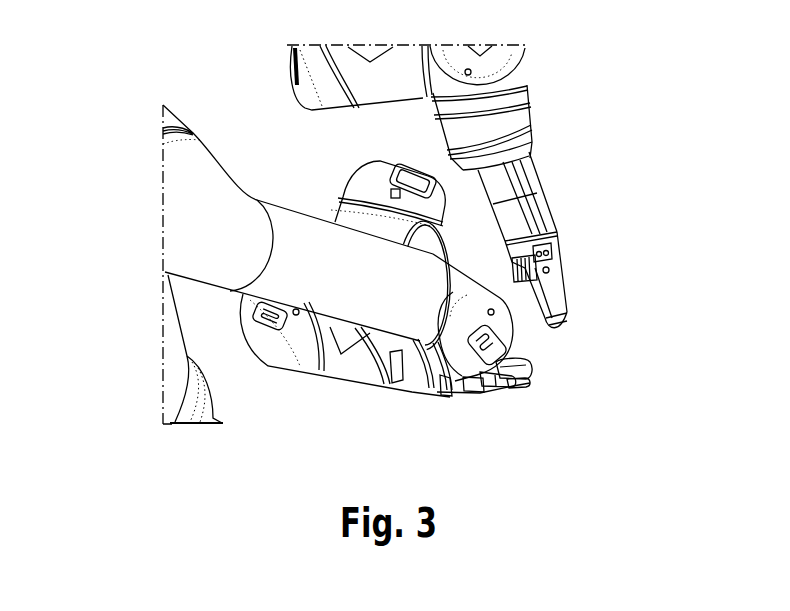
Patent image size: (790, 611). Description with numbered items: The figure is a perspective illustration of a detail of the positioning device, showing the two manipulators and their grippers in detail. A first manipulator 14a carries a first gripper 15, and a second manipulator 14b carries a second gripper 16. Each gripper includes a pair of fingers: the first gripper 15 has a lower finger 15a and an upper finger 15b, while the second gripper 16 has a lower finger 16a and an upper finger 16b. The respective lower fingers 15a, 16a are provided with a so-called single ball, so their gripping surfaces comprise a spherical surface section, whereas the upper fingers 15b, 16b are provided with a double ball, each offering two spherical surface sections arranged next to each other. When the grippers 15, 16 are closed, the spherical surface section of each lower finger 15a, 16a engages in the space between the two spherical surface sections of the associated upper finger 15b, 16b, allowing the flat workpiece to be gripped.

The first manipulator 14a is at (190, 248).
The second manipulator 14b is at (510, 61).
The first gripper 15 is at (542, 439).
The lower finger 15a is at (523, 398).
The upper finger 15b is at (540, 368).
The second gripper 16 is at (586, 250).
The lower finger 16a is at (578, 326).
The upper finger 16b is at (575, 287).